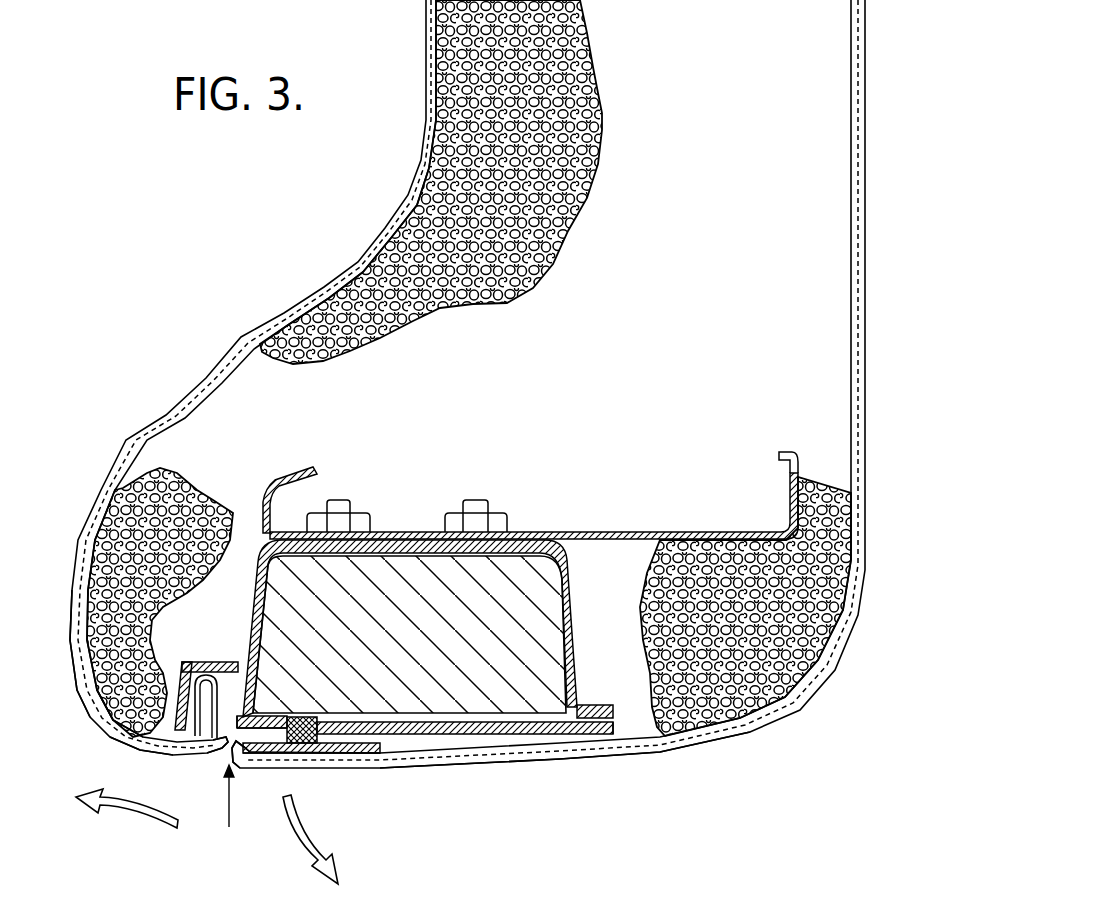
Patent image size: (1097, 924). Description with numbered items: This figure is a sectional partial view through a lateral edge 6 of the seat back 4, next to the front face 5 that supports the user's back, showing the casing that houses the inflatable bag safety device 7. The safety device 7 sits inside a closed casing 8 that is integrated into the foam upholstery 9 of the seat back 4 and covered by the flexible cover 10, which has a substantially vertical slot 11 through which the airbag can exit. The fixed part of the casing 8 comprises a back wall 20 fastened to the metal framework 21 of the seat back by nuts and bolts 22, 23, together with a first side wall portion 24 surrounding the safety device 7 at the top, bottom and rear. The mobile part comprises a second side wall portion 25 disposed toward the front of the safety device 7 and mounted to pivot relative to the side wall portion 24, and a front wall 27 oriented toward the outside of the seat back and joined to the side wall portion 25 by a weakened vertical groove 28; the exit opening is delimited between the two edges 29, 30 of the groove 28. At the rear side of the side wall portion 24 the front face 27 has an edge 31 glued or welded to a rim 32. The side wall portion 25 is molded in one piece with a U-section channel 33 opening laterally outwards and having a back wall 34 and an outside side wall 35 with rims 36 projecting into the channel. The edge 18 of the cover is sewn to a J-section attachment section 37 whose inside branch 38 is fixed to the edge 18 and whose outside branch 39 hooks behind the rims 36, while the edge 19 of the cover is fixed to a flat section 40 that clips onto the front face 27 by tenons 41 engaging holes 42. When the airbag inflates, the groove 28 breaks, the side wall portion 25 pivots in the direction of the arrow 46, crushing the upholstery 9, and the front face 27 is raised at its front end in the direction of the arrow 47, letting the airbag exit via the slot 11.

The seat back 4 is at (818, 40).
The front face 5 is at (426, 24).
The lateral edge 6 is at (686, 736).
The inflatable bag safety device 7 is at (497, 597).
The closed casing 8 is at (594, 561).
The foam upholstery 9 is at (103, 505).
The cover 10 is at (232, 342).
The slot 11 is at (232, 813).
The edge of the slot 18 is at (226, 757).
The edge of the slot 19 is at (241, 764).
The back wall 20 is at (407, 532).
The metal framework 21 is at (793, 455).
The bolt 22 is at (480, 502).
The nut 23 is at (497, 520).
The first side wall portion 24 is at (572, 636).
The second side wall portion 25 is at (276, 513).
The front wall 27 is at (510, 734).
The vertical groove 28 is at (260, 722).
The edge of the groove 29 is at (253, 716).
The edge of the groove 30 is at (285, 716).
The edge of the front face 31 is at (608, 734).
The rim 32 is at (600, 709).
The U-section channel 33 is at (95, 698).
The back wall of the channel 34 is at (225, 661).
The outside side wall 35 is at (172, 736).
The rim 36 is at (195, 740).
The J-section attachment section 37 is at (199, 661).
The inside branch 38 is at (220, 742).
The outside branch 39 is at (128, 723).
The flat section 40 is at (345, 762).
The tenon 41 is at (313, 760).
The hole 42 is at (318, 727).
The arrow 46 is at (124, 815).
The arrow 47 is at (303, 857).